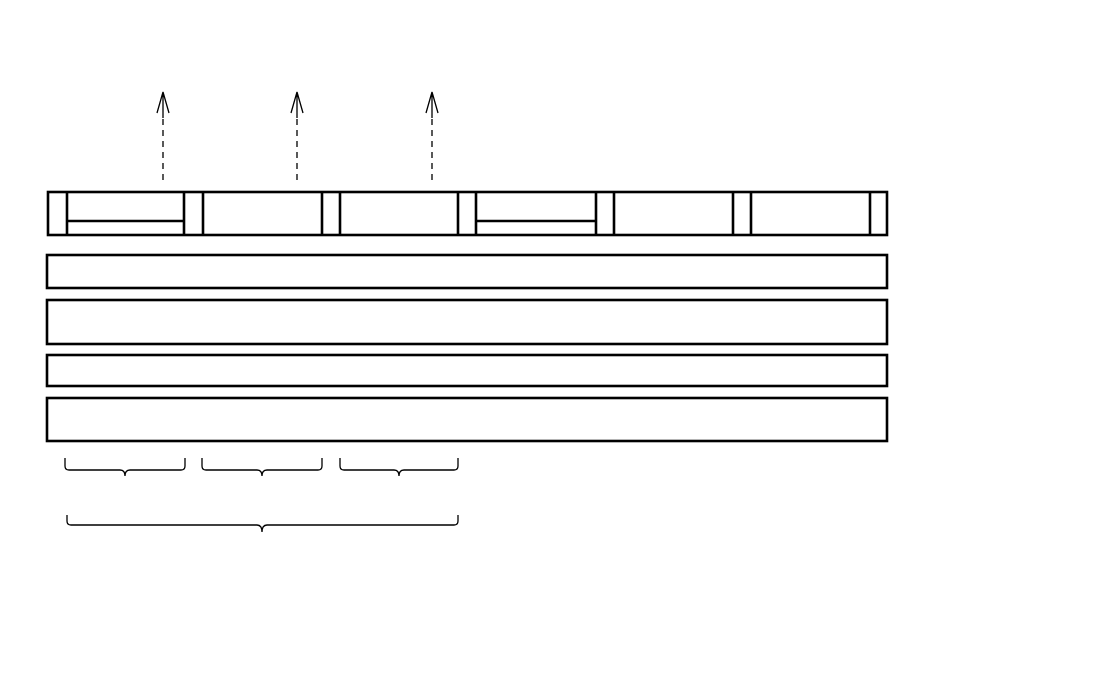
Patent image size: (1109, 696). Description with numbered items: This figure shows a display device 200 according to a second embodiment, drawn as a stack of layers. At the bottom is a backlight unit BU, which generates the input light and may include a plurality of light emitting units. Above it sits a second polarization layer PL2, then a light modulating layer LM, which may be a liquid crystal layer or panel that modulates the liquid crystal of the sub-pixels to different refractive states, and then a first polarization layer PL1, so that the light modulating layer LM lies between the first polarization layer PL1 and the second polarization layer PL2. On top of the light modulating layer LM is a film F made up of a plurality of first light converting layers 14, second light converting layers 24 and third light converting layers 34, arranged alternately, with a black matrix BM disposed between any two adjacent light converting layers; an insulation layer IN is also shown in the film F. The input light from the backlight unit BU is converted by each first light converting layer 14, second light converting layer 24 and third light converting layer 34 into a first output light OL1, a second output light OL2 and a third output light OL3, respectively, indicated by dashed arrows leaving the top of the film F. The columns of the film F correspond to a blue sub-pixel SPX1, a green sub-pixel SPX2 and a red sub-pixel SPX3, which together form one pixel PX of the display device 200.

The display device 200 is at (670, 54).
The film F is at (839, 174).
The first light converting layer 14 is at (95, 230).
The second light converting layer 24 is at (257, 220).
The third light converting layer 34 is at (394, 217).
The insulation layer IN is at (133, 207).
The black matrix BM is at (607, 215).
The first output light OL1 is at (163, 118).
The second output light OL2 is at (297, 118).
The third output light OL3 is at (432, 118).
The first polarization layer PL1 is at (867, 278).
The light modulating layer LM is at (867, 325).
The second polarization layer PL2 is at (867, 378).
The backlight unit BU is at (867, 425).
The blue sub-pixel SPX1 is at (125, 486).
The green sub-pixel SPX2 is at (262, 486).
The red sub-pixel SPX3 is at (399, 486).
The pixel PX is at (262, 542).